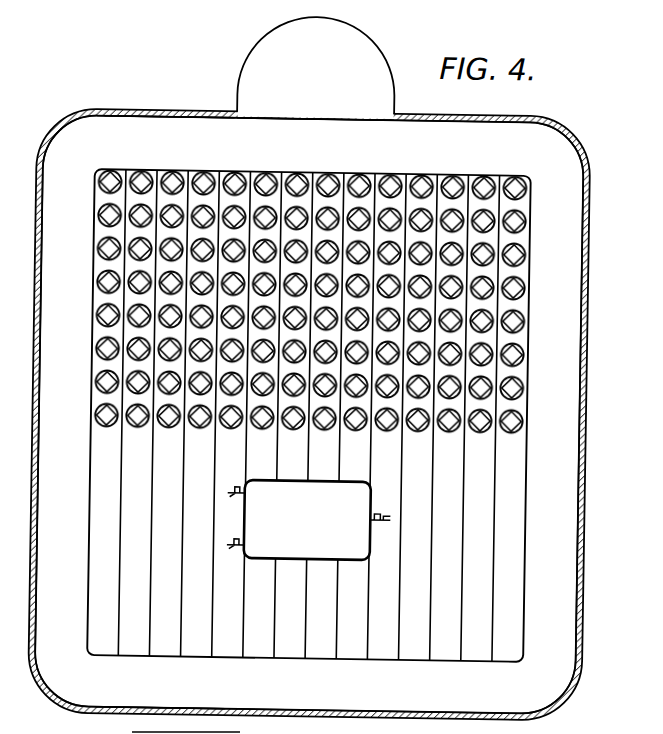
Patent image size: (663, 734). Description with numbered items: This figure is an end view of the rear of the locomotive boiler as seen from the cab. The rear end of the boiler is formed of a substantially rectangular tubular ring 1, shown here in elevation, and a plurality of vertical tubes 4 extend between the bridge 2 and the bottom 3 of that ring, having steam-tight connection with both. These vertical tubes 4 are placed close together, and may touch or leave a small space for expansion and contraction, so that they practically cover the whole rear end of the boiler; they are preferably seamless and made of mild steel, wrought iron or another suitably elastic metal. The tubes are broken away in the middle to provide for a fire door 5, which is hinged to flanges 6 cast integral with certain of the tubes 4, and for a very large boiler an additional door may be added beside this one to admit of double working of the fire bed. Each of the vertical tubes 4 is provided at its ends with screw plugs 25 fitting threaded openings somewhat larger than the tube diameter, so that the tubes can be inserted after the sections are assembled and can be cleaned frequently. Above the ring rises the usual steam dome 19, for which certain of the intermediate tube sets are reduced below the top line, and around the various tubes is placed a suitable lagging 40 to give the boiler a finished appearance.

The tubular ring 1 is at (52, 494).
The lagging 40 is at (101, 115).
The bridge 2 is at (169, 131).
The bottom 3 is at (160, 694).
The steam dome 19 is at (316, 68).
The vertical tubes 4 is at (423, 504).
The screw plugs 25 is at (512, 251).
The fire door 5 is at (307, 520).
The flanges 6 is at (238, 547).